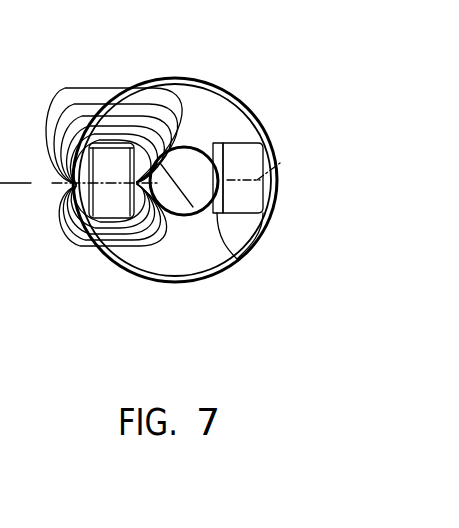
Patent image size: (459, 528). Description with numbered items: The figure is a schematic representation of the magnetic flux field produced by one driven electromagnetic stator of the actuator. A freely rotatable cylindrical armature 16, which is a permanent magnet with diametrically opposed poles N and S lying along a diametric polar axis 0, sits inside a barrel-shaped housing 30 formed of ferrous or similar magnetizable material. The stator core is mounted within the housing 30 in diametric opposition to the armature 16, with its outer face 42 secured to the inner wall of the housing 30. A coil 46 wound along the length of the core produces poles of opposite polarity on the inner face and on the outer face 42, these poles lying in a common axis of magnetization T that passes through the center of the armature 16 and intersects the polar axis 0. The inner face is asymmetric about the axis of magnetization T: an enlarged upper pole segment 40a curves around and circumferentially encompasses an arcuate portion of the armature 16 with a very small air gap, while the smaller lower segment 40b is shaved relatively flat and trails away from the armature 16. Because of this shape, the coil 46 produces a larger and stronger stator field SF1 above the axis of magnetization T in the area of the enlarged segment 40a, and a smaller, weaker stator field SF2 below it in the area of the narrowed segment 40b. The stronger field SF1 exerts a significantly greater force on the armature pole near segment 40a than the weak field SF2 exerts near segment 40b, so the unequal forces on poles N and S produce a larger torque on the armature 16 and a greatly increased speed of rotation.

The armature 16 is at (194, 143).
The housing 30 is at (203, 284).
The enlarged upper pole segment 40a is at (213, 143).
The lower segment 40b is at (239, 257).
The outer face 42 is at (283, 182).
The coil 46 is at (250, 154).
The axis of magnetization T is at (303, 162).
The north armature pole N is at (180, 167).
The south armature pole S is at (200, 196).
The polar axis 0 is at (190, 204).
The larger stator field SF1 is at (72, 92).
The smaller stator field SF2 is at (70, 241).